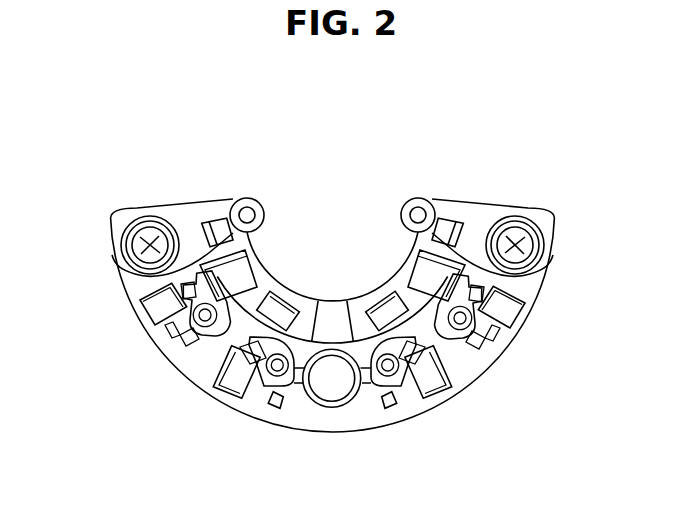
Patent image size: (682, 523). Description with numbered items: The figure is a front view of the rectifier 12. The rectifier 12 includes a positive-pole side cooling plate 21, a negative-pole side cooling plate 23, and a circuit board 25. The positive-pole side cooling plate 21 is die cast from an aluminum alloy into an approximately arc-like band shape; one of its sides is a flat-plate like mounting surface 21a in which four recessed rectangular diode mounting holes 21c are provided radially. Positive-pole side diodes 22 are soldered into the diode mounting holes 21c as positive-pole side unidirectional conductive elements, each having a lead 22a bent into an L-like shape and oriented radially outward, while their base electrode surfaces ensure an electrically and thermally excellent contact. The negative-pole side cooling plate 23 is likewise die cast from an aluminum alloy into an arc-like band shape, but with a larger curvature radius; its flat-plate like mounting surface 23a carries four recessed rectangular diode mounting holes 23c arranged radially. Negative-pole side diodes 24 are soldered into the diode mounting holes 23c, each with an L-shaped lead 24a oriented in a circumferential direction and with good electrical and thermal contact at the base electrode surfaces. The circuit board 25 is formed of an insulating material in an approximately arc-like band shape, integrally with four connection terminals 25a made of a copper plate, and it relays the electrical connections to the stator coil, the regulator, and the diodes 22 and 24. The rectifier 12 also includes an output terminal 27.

The rectifier 12 is at (525, 393).
The positive-pole side cooling plate 21 is at (347, 297).
The mounting surface 21a is at (267, 285).
The diode mounting holes 21c is at (440, 253).
The positive-pole side diodes 22 is at (385, 303).
The lead 22a is at (143, 302).
The negative-pole side cooling plate 23 is at (157, 351).
The mounting surface 23a is at (293, 417).
The diode mounting holes 23c is at (525, 318).
The negative-pole side diodes 24 is at (215, 370).
The lead 24a is at (266, 408).
The circuit board 25 is at (188, 207).
The connection terminals 25a is at (427, 403).
The output terminal 27 is at (338, 378).